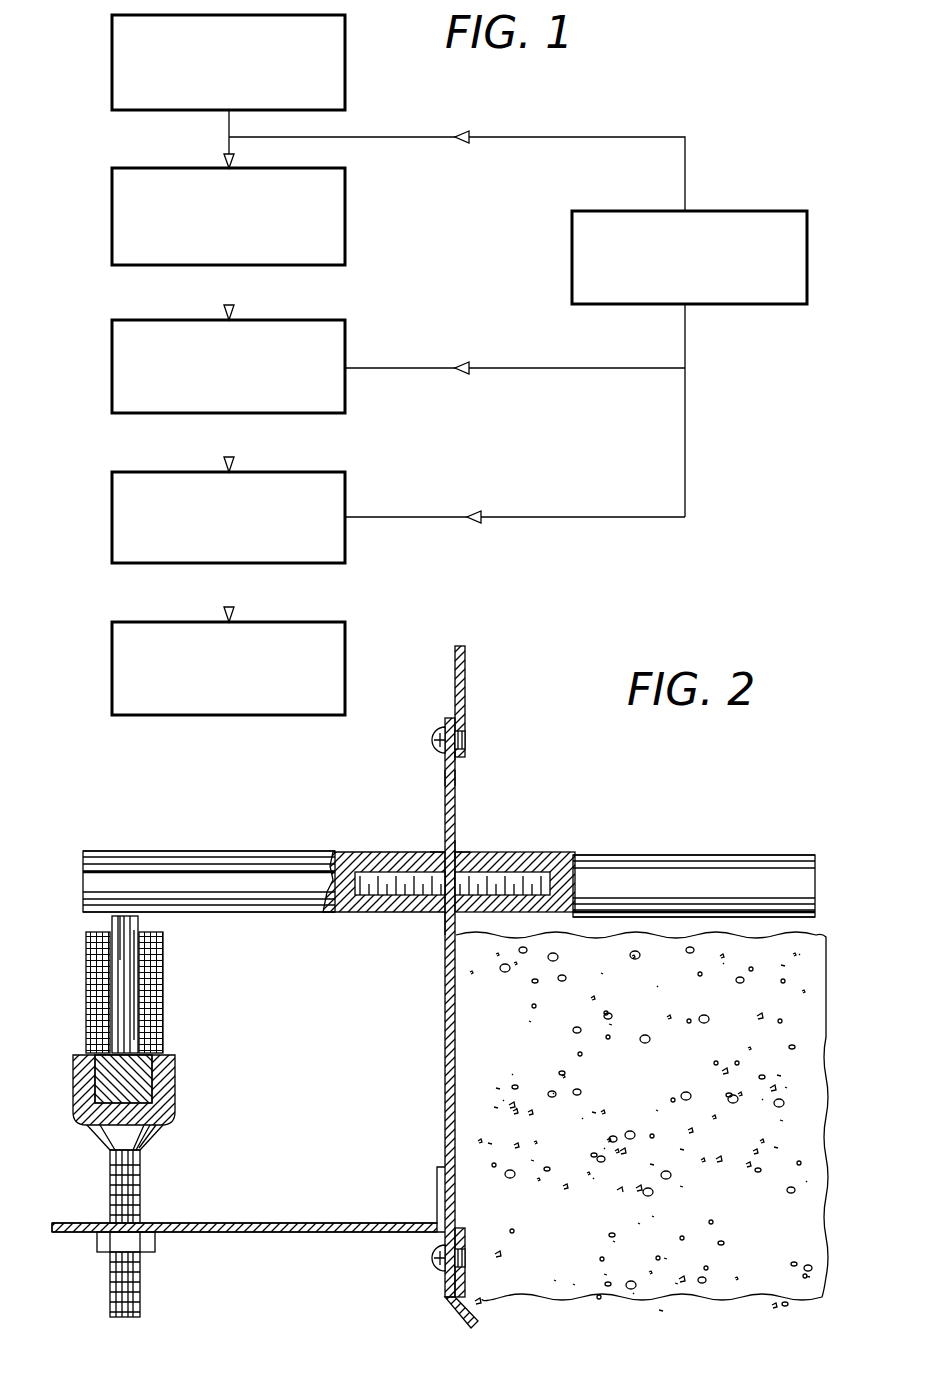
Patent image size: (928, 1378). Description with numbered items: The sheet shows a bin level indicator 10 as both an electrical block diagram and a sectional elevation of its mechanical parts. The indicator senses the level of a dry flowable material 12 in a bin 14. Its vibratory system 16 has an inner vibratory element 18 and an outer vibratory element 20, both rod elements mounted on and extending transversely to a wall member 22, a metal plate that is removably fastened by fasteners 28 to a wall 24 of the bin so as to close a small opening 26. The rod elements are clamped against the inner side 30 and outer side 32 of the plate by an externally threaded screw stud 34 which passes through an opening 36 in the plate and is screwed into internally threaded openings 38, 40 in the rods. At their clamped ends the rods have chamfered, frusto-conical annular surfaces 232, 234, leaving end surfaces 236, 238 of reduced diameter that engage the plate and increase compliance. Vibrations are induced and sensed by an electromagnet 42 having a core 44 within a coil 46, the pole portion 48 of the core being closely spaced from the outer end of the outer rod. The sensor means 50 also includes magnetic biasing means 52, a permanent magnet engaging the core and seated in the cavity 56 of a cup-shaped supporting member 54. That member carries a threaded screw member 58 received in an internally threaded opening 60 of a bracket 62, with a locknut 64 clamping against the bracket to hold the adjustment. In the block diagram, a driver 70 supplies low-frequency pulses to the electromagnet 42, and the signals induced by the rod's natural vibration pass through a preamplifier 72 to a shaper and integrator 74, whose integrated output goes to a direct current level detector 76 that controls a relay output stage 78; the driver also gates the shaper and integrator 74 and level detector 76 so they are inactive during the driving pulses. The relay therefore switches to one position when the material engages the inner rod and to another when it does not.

In FIG. 1, the level indicator 10 is at (594, 119).
In FIG. 2, the level indicator 10 is at (144, 818).
In FIG. 2, the flowable material 12 is at (796, 1046).
In FIG. 2, the bin 14 is at (450, 1300).
In FIG. 2, the vibratory system 16 is at (707, 846).
In FIG. 2, the inner vibratory element 18 is at (598, 856).
In FIG. 2, the outer vibratory element 20 is at (215, 877).
In FIG. 2, the wall member 22 is at (445, 803).
In FIG. 2, the wall 24 is at (455, 677).
In FIG. 2, the opening 26 is at (466, 753).
In FIG. 2, the fasteners 28 is at (433, 741).
In FIG. 2, the inner side 30 is at (455, 779).
In FIG. 2, the outer side 32 is at (445, 779).
In FIG. 2, the screw stud 34 is at (370, 912).
In FIG. 2, the opening 36 is at (432, 912).
In FIG. 2, the internally threaded opening 38 is at (528, 878).
In FIG. 2, the internally threaded opening 40 is at (360, 870).
In FIG. 1, the electromagnet 42 is at (346, 77).
In FIG. 2, the electromagnet 42 is at (138, 978).
In FIG. 2, the core 44 is at (128, 992).
In FIG. 2, the coil 46 is at (163, 1036).
In FIG. 2, the pole portion 48 is at (118, 922).
In FIG. 2, the sensor means 50 is at (156, 1145).
In FIG. 2, the magnetic biasing means 52 is at (129, 1080).
In FIG. 2, the cup-shaped supporting member 54 is at (172, 1122).
In FIG. 2, the cavity 56 is at (96, 1076).
In FIG. 2, the screw member 58 is at (141, 1292).
In FIG. 2, the internally threaded opening 60 is at (141, 1210).
In FIG. 2, the bracket 62 is at (300, 1223).
In FIG. 2, the locknut 64 is at (156, 1243).
In FIG. 1, the driver 70 is at (808, 246).
In FIG. 1, the preamplifier 72 is at (346, 221).
In FIG. 1, the shaper and integrator 74 is at (346, 336).
In FIG. 1, the direct current level detector 76 is at (346, 492).
In FIG. 1, the relay output stage 78 is at (346, 633).
In FIG. 2, the annular surface 232 is at (462, 852).
In FIG. 2, the annular surface 234 is at (443, 852).
In FIG. 2, the end surface 236 is at (458, 850).
In FIG. 2, the end surface 238 is at (442, 928).